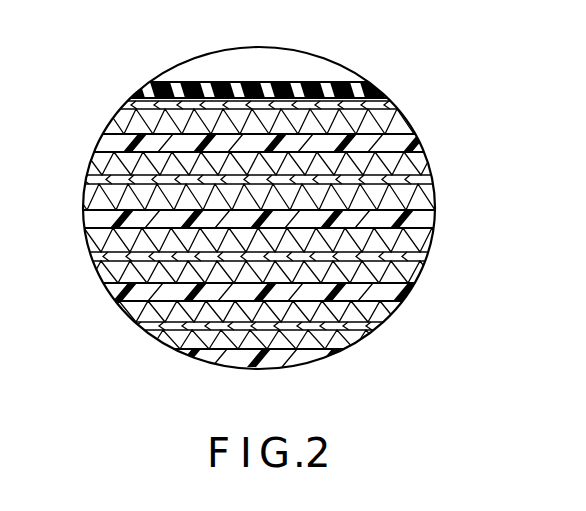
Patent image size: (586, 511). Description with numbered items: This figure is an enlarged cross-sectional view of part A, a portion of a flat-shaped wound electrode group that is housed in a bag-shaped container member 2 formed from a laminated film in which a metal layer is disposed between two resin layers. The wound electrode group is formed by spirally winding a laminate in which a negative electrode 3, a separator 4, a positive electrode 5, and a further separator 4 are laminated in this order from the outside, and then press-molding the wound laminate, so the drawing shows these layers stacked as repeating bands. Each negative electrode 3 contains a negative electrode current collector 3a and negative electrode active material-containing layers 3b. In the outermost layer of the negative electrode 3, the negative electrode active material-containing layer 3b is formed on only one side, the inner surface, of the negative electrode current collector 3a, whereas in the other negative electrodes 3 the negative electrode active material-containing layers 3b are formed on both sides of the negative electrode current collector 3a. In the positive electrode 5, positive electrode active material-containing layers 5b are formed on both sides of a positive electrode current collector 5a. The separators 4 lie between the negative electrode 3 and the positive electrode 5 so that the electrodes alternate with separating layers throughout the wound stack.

The part A is at (179, 74).
The container member 2 is at (371, 90).
The negative electrode 3 is at (304, 190).
The negative electrode current collector 3a is at (390, 106).
The negative electrode active material-containing layer 3b is at (390, 122).
The separator 4 is at (108, 143).
The positive electrode 5 is at (303, 266).
The positive electrode current collector 5a is at (418, 181).
The positive electrode active material-containing layer 5b is at (418, 165).